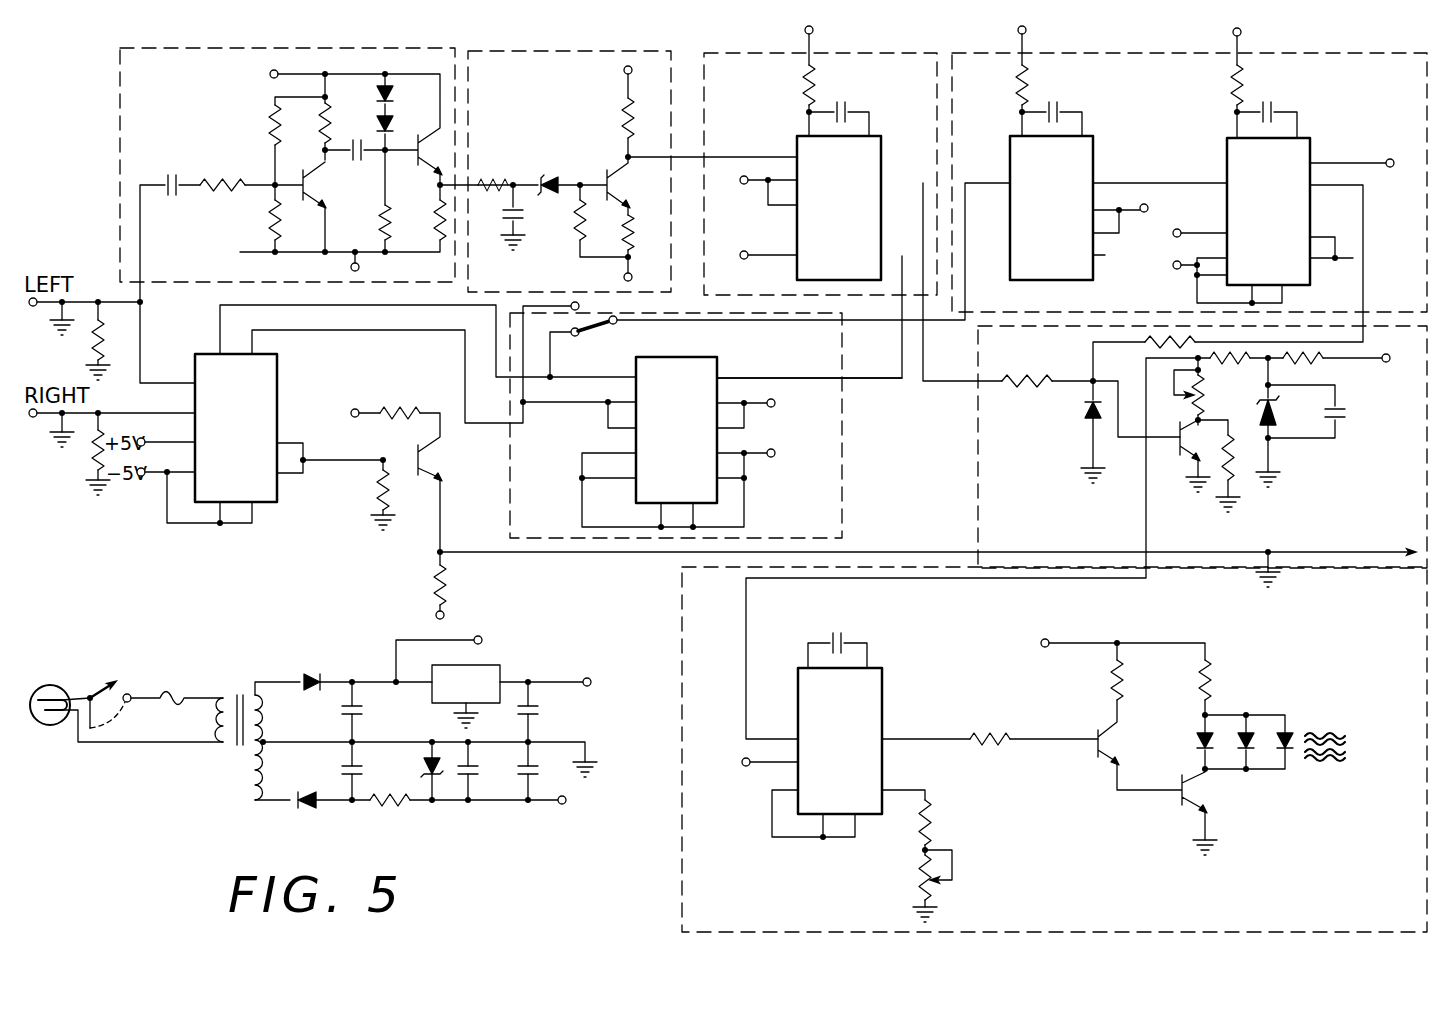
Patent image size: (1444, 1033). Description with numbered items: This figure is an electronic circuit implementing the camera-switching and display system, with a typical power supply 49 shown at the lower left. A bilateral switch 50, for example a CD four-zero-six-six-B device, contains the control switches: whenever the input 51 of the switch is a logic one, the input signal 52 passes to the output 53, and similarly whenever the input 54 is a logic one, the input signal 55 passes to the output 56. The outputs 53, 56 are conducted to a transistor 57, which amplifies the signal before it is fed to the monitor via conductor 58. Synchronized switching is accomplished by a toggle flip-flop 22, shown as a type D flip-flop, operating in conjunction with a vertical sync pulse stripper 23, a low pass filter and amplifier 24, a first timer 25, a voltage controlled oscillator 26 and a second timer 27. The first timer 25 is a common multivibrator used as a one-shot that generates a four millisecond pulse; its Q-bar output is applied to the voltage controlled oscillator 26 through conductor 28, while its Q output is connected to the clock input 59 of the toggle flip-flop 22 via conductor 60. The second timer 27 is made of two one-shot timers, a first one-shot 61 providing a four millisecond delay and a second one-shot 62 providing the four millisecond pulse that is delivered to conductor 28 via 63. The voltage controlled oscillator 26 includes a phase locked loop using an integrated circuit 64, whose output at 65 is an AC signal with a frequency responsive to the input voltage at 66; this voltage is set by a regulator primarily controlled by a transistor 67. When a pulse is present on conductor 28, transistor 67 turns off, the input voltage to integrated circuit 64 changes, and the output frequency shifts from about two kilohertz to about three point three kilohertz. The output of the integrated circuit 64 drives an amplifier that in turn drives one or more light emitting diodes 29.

The toggle flip-flop 22 is at (858, 450).
The vertical sync pulse stripper 23 is at (106, 146).
The low pass filter and amplifier 24 is at (607, 42).
The first timer 25 is at (887, 42).
The voltage controlled oscillator 26 is at (955, 493).
The second timer 27 is at (1351, 42).
The conductor 28 is at (948, 380).
The light emitting diodes 29 is at (1292, 740).
The power supply 49 is at (296, 664).
The bilateral switch 50 is at (279, 377).
The input 51 is at (220, 352).
The input signal 52 is at (195, 383).
The output 53 is at (279, 443).
The input 54 is at (253, 346).
The input signal 55 is at (195, 412).
The output 56 is at (280, 475).
The transistor 57 is at (432, 455).
The conductor 58 is at (510, 552).
The clock input 59 is at (718, 378).
The conductor 60 is at (868, 378).
The first one-shot 61 is at (1093, 132).
The second one-shot 62 is at (1302, 146).
The conductor 63 is at (1093, 360).
The integrated circuit 64 is at (880, 680).
The output 65 is at (882, 735).
The input voltage 66 is at (796, 738).
The transistor 67 is at (1180, 432).